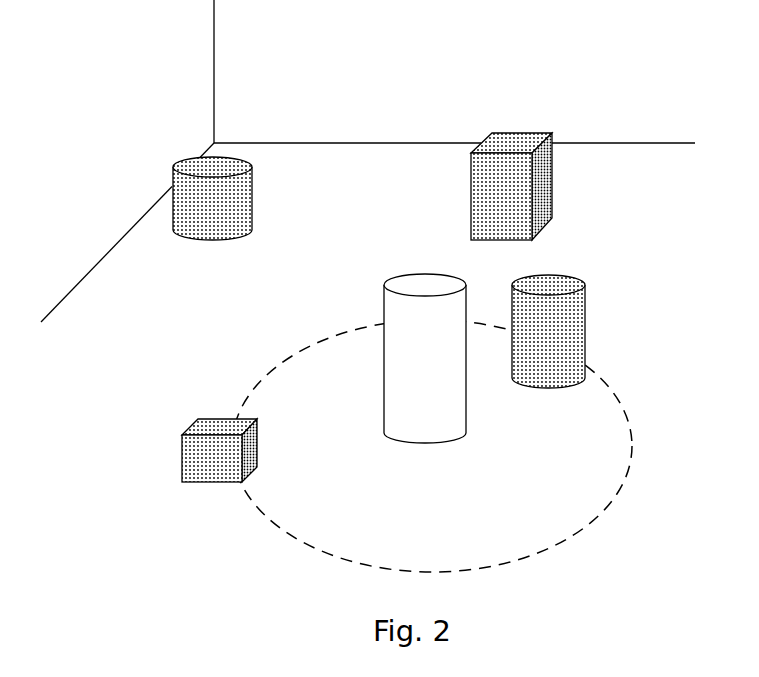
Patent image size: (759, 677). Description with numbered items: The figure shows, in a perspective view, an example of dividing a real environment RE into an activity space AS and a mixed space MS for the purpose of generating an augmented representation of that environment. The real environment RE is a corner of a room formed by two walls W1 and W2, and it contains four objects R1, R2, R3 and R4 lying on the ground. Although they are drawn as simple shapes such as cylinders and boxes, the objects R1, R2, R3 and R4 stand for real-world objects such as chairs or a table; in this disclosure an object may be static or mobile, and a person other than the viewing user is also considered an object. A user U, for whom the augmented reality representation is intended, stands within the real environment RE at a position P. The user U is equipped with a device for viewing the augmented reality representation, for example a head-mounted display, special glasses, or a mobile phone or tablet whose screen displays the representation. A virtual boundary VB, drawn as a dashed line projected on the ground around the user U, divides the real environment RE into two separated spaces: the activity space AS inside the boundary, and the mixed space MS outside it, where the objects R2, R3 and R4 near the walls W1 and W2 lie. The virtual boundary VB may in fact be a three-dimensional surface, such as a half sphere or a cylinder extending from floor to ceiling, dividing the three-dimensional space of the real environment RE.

The real environment RE is at (106, 55).
The wall W1 is at (90, 160).
The wall W2 is at (362, 90).
The object R1 is at (219, 450).
The object R2 is at (548, 331).
The object R3 is at (212, 198).
The object R4 is at (511, 186).
The user U is at (425, 358).
The position P is at (423, 446).
The virtual boundary VB is at (625, 482).
The mixed space MS is at (227, 355).
The activity space AS is at (325, 377).